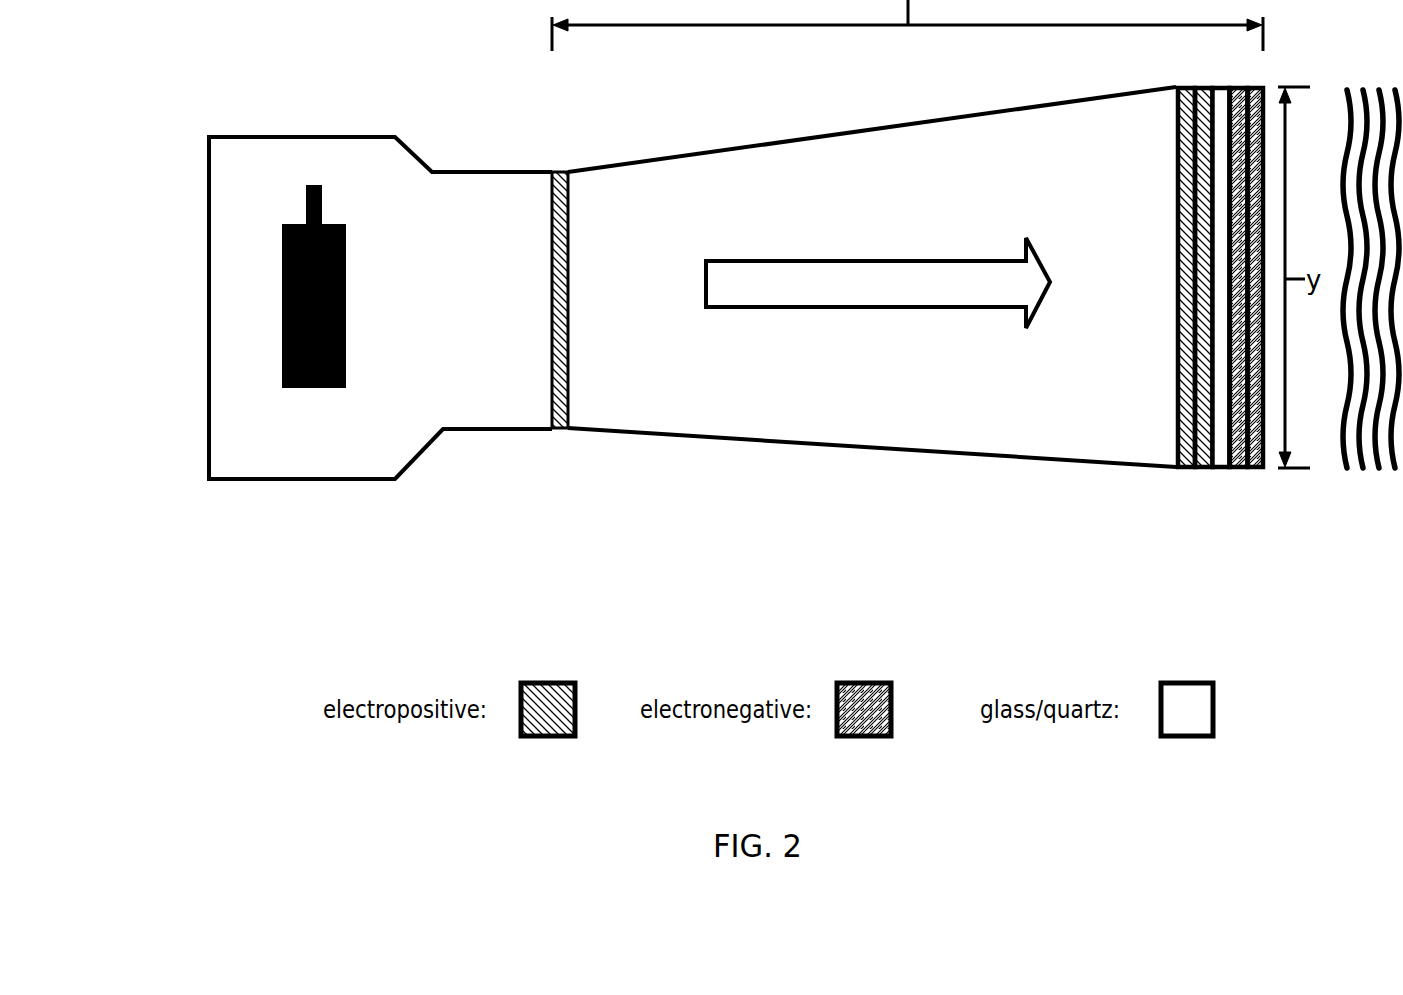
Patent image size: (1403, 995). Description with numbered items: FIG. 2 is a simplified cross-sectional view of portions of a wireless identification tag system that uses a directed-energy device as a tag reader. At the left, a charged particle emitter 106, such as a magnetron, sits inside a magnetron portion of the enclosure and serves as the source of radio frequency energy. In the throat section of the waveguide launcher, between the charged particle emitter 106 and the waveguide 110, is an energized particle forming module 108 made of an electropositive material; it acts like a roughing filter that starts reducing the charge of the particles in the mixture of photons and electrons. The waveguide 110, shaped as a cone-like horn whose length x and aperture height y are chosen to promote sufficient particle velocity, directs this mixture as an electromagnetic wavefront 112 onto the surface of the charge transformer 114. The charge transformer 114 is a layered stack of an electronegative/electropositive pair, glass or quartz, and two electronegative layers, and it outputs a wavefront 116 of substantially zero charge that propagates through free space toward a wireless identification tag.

The charged particle emitter 106 is at (270, 302).
The energized particle forming module 108 is at (560, 443).
The waveguide 110 is at (849, 457).
The electromagnetic wavefront 112 is at (878, 283).
The charge transformer 114 is at (1219, 483).
The wavefront 116 is at (1371, 483).